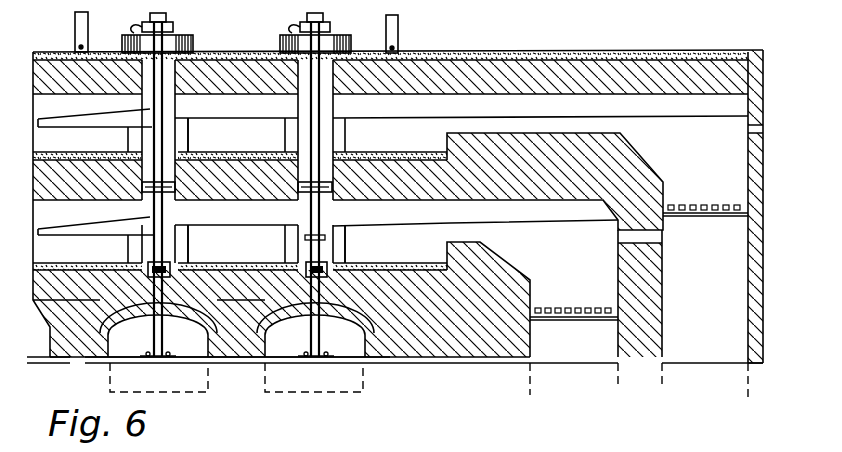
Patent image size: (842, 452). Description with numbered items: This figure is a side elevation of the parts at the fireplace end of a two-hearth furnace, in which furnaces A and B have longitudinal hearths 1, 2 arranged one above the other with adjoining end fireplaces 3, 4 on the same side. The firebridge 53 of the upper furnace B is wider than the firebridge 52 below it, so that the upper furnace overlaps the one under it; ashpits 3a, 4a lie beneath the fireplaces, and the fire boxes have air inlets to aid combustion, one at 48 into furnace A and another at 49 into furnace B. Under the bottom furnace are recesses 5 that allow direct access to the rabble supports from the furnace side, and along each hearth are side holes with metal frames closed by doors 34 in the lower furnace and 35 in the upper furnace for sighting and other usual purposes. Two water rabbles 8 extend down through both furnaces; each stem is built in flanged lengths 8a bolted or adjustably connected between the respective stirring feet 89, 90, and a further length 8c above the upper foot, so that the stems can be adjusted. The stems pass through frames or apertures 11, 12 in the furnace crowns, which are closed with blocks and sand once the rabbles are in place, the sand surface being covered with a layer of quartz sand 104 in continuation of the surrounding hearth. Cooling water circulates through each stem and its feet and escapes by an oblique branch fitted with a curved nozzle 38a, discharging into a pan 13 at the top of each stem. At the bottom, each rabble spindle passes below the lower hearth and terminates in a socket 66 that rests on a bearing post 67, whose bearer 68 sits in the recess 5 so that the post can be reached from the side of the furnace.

The longitudinal hearth 1 is at (398, 203).
The longitudinal hearth 2 is at (240, 143).
The end fireplace 3 is at (574, 299).
The ashpit 3a is at (504, 347).
The end fireplace 4 is at (705, 197).
The ashpit 4a is at (712, 331).
The recess 5 is at (208, 339).
The water rabble 8 is at (167, 105).
The flanged length 8a is at (168, 213).
The flanged length 8c is at (337, 25).
The aperture 11 is at (275, 198).
The aperture 12 is at (283, 93).
The pan 13 is at (126, 46).
The closing door 34 is at (187, 240).
The closing door 35 is at (292, 138).
The curved nozzle 38a is at (138, 15).
The air inlet 48 is at (665, 237).
The air inlet 49 is at (748, 131).
The firebridge 52 is at (478, 240).
The firebridge 53 is at (605, 132).
The socket 66 is at (214, 253).
The bearing post 67 is at (153, 340).
The bearer 68 is at (137, 360).
The stirring foot 89 is at (93, 120).
The stirring foot 90 is at (93, 228).
The layer of quartz sand 104 is at (430, 263).
The furnace A is at (364, 244).
The furnace B is at (390, 124).